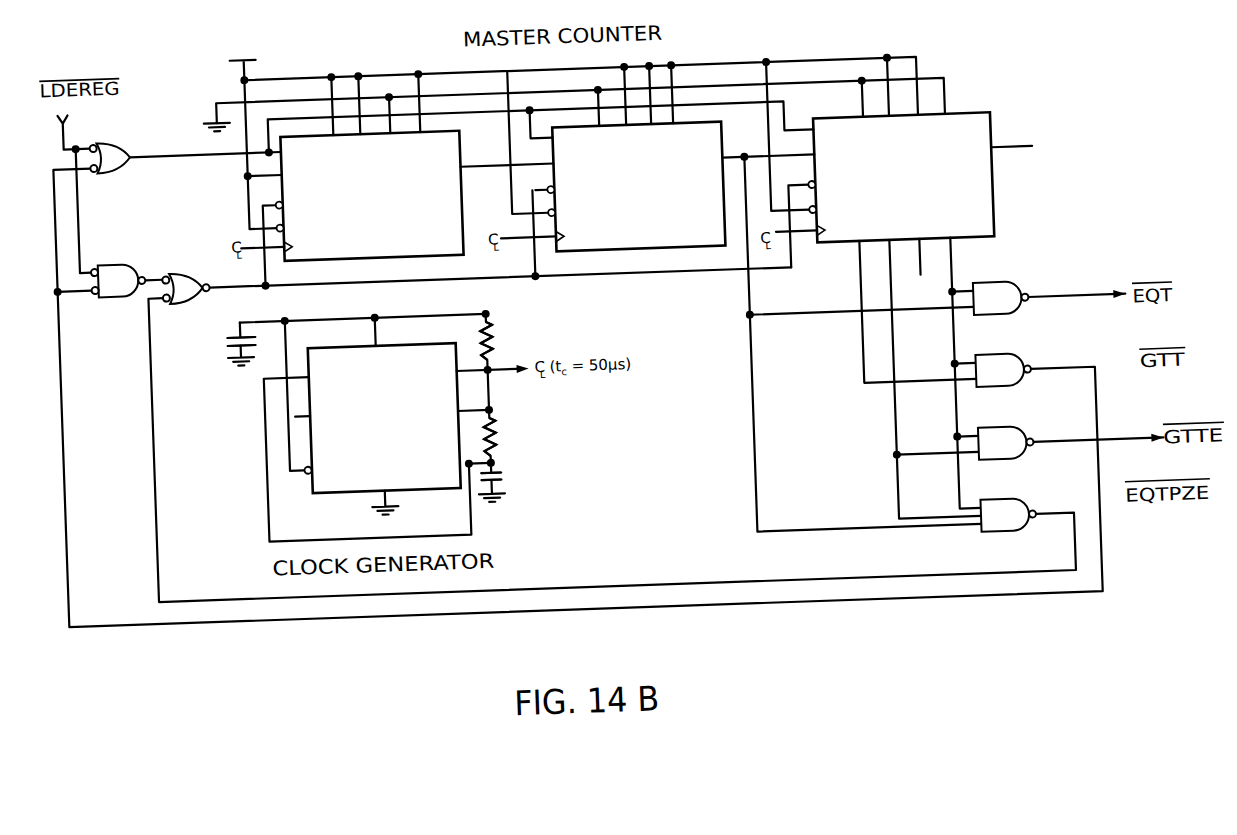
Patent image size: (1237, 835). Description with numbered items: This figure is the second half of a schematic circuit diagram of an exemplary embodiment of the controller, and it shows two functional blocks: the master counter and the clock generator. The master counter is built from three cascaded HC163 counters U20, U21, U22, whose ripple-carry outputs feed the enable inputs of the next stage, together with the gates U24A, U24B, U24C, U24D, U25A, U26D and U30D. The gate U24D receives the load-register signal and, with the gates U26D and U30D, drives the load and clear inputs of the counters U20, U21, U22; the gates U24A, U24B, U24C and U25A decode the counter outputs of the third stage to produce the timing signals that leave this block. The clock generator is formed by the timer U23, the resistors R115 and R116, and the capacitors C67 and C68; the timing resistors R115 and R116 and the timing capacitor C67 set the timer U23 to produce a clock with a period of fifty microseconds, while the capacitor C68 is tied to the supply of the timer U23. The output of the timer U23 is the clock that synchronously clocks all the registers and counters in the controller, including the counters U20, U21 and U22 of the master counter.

The counter U20 is at (368, 206).
The counter U21 is at (635, 197).
The counter U22 is at (899, 189).
The timer U23 is at (377, 431).
The gate U24A is at (1016, 294).
The gate U24B is at (1027, 372).
The gate U24C is at (1027, 444).
The gate U24D is at (129, 163).
The gate U25A is at (1031, 517).
The gate U26D is at (111, 283).
The gate U30D is at (183, 286).
The capacitor C67 is at (530, 486).
The capacitor C68 is at (208, 346).
The resistor R115 is at (520, 434).
The resistor R116 is at (516, 333).